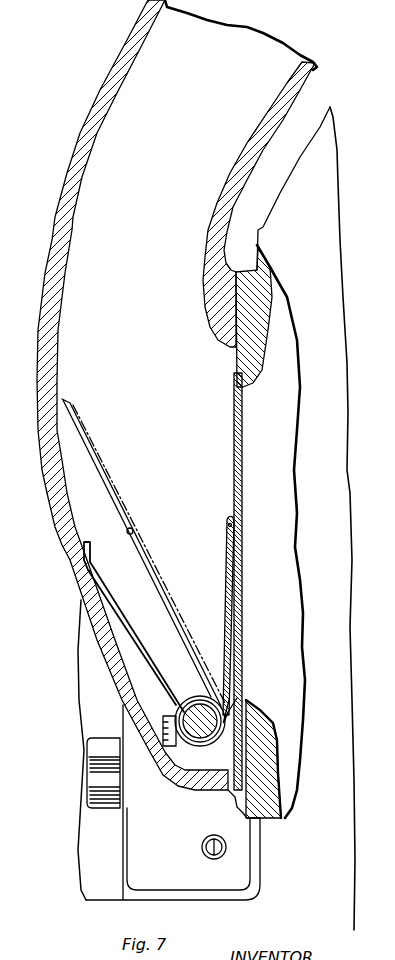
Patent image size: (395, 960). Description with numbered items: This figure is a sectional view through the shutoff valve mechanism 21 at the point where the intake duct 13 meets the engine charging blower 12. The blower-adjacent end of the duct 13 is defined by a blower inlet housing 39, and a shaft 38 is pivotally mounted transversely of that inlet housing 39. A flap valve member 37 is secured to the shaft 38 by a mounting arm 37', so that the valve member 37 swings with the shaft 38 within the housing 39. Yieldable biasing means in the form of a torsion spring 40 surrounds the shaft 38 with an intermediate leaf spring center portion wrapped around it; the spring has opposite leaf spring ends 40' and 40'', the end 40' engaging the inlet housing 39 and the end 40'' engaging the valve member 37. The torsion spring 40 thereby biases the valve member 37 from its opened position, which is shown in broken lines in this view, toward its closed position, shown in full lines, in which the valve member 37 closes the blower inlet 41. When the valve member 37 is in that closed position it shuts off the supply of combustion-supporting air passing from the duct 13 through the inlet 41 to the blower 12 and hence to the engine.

The engine charging blower 12 is at (265, 820).
The duct 13 is at (135, 78).
The shutoff valve mechanism 21 is at (250, 404).
The flap valve member 37 is at (206, 614).
The mounting arm 37' is at (255, 684).
The shaft 38 is at (195, 697).
The blower inlet housing 39 is at (82, 592).
The torsion spring 40 is at (204, 742).
The leaf spring end 40' is at (141, 552).
The leaf spring end 40'' is at (150, 555).
The blower inlet 41 is at (280, 623).